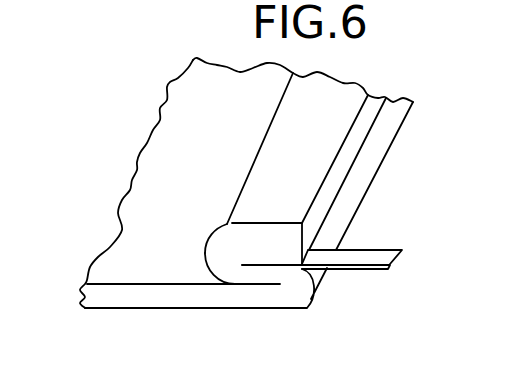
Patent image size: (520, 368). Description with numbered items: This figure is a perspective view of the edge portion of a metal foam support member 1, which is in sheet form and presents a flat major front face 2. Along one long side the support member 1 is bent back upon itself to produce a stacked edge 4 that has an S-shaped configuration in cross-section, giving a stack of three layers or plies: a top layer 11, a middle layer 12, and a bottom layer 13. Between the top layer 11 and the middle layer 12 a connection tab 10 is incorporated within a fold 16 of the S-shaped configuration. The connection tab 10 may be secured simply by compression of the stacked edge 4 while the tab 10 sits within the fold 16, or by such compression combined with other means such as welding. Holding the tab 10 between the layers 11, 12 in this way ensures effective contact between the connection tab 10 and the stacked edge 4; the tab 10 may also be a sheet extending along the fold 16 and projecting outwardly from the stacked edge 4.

The metal foam support member 1 is at (120, 165).
The major front face 2 is at (192, 162).
The stacked edge 4 is at (382, 147).
The connection tab 10 is at (403, 257).
The top layer 11 is at (265, 229).
The middle layer 12 is at (219, 271).
The bottom layer 13 is at (300, 297).
The fold 16 is at (318, 228).